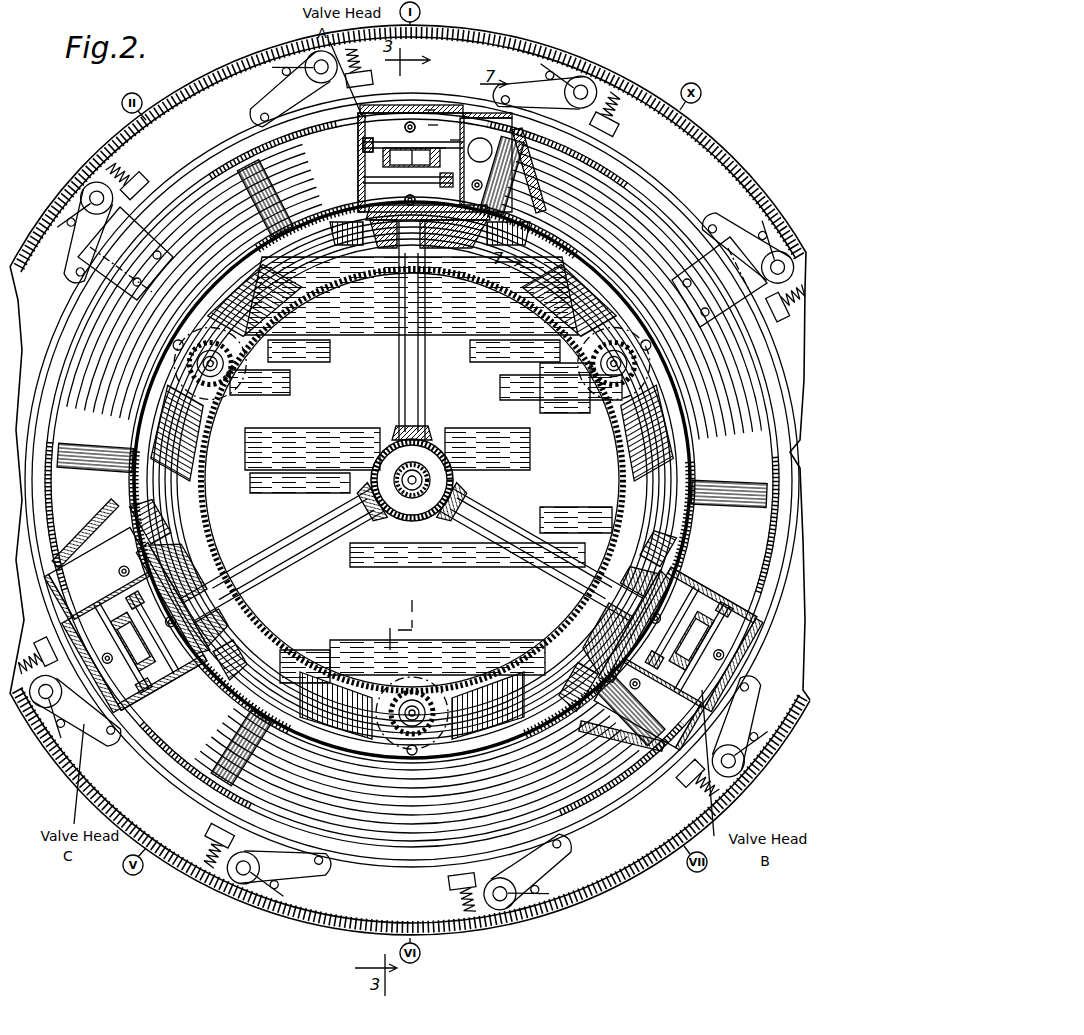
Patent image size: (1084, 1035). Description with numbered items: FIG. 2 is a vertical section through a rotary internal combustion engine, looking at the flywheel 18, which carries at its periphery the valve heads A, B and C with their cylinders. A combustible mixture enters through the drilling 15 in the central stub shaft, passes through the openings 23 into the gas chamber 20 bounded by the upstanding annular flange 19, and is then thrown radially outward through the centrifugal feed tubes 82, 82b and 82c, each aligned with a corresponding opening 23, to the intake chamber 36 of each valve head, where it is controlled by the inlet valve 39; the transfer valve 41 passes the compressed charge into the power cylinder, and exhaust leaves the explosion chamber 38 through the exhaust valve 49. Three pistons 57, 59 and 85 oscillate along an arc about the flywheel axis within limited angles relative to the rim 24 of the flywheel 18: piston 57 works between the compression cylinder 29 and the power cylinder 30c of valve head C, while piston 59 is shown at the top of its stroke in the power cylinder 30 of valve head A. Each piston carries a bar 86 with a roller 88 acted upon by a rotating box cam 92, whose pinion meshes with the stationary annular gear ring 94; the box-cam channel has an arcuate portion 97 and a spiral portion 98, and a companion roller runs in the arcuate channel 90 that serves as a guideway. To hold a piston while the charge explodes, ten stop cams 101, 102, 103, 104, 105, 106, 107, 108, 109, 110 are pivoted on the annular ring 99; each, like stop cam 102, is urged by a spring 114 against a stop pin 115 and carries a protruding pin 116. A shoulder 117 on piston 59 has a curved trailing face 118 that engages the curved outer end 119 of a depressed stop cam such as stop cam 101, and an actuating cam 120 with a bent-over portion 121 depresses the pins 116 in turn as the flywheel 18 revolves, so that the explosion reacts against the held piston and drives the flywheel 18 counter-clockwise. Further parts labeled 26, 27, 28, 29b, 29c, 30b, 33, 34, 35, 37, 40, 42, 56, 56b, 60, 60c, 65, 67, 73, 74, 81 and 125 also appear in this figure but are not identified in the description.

The drilling 15 is at (412, 492).
The flywheel 18 is at (426, 470).
The upstanding annular flange 19 is at (432, 470).
The gas chamber 20 is at (380, 452).
The opening 23 is at (424, 470).
The rim 24 is at (290, 330).
The valve port wall 26 is at (376, 264).
The cylinder head wall 27 is at (322, 175).
The piston 28 is at (527, 160).
The compression cylinder 29 is at (334, 234).
The cylinder wall B 29b is at (690, 545).
The cylinder wall C 29c is at (200, 800).
The power cylinder 30 is at (506, 236).
The inner cylinder wall B 30b is at (602, 762).
The power cylinder 30c is at (130, 510).
The valve 33 is at (433, 126).
The valve seat 34 is at (441, 150).
The port 35 is at (358, 260).
The intake chamber 36 is at (440, 262).
The valve stem 37 is at (431, 110).
The explosion chamber 38 is at (470, 262).
The inlet valve 39 is at (392, 262).
The liner 40 is at (358, 226).
The transfer valve 41 is at (446, 129).
The valve guide 42 is at (468, 114).
The exhaust valve 49 is at (480, 150).
The piston head 56 is at (332, 168).
The piston head B 56b is at (736, 500).
The piston 57 is at (302, 246).
The piston 59 is at (542, 234).
The cylinder 60 is at (522, 188).
The cylinder C 60c is at (95, 452).
The valve spring 65 is at (415, 150).
The screw 67 is at (397, 135).
The spoke stem 73 is at (417, 232).
The bolt 74 is at (358, 143).
The screw 81 is at (430, 190).
The centrifugal feed tube 82 is at (426, 358).
The centrifugal feed tube 82b is at (524, 562).
The centrifugal feed tube 82c is at (302, 563).
The piston 85 is at (592, 792).
The bar 86 is at (412, 480).
The roller 88 is at (206, 304).
The arcuate channel 90 is at (172, 336).
The rotating box cam 92 is at (206, 430).
The annular gear ring 94 is at (214, 480).
The arcuate portion of channel 97 is at (240, 368).
The spiral portion of channel 98 is at (270, 286).
The annular ring 99 is at (642, 72).
The stop cam 101 is at (762, 224).
The stop cam 102 is at (574, 70).
The stop cam 103 is at (306, 62).
The stop cam 104 is at (76, 212).
The stop cam 105 is at (122, 516).
The stop cam 106 is at (85, 725).
The stop cam 107 is at (282, 878).
The stop cam 108 is at (548, 858).
The stop cam 109 is at (760, 760).
The stop cam 110 is at (790, 450).
The spring 114 is at (620, 96).
The stop pin 115 is at (562, 74).
The protruding pin 116 is at (516, 80).
The shoulder 117 is at (688, 206).
The curved trailing face 118 is at (700, 228).
The curved outer end 119 is at (702, 216).
The actuating cam 120 is at (732, 226).
The bent-over portion 121 is at (712, 232).
The valve cap 125 is at (364, 113).